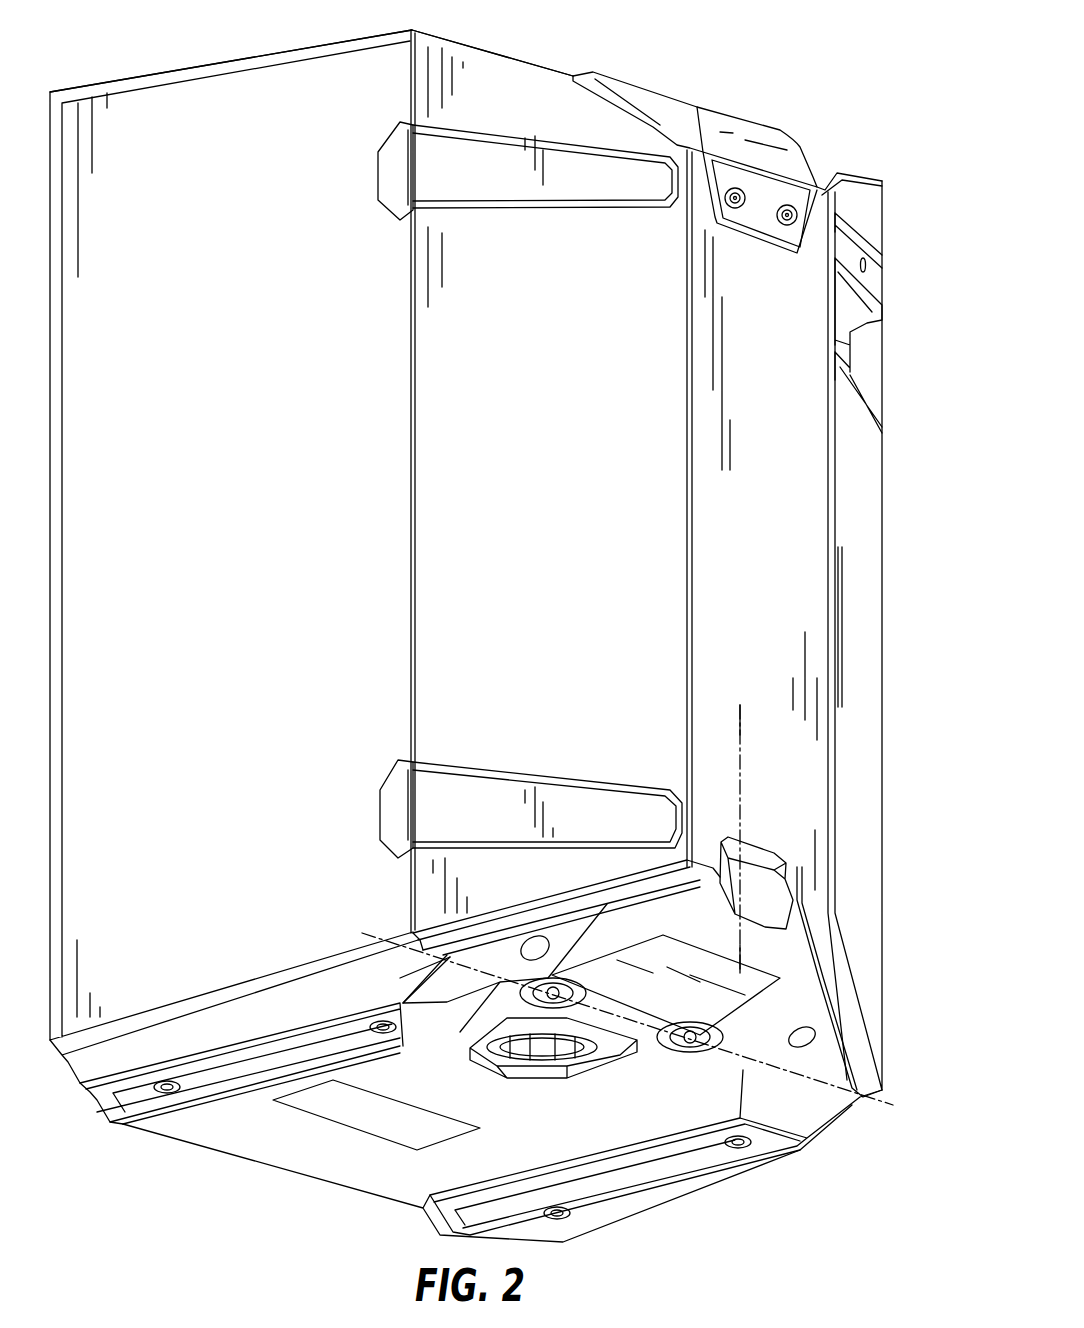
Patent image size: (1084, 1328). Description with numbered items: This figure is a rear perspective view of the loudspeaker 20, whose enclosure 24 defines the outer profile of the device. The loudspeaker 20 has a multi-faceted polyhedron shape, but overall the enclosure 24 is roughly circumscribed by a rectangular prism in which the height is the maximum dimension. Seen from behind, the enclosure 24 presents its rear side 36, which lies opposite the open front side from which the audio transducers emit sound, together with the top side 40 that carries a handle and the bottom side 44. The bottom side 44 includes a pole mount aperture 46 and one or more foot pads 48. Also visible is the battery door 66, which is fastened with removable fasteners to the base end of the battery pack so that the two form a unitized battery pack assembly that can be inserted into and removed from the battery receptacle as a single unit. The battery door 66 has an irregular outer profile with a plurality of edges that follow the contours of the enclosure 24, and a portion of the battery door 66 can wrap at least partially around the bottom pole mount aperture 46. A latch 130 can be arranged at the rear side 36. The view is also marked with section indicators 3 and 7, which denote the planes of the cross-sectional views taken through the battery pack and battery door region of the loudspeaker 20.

The loudspeaker 20 is at (800, 108).
The enclosure 24 is at (251, 516).
The rear side 36 is at (772, 515).
The top side 40 is at (240, 58).
The bottom side 44 is at (365, 1162).
The pole mount aperture 46 is at (555, 1048).
The foot pads 48 is at (210, 1078).
The battery door 66 is at (712, 993).
The latch 130 is at (767, 888).
The section line 3 is at (744, 731).
The section line 7 is at (362, 933).